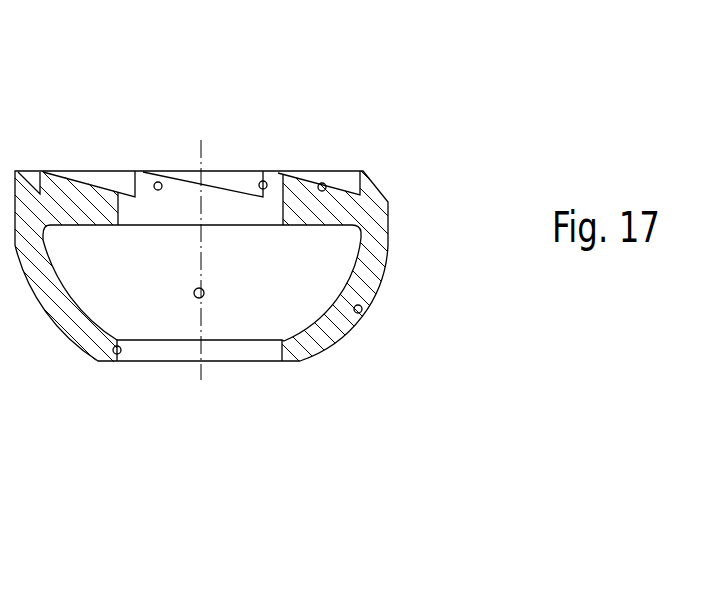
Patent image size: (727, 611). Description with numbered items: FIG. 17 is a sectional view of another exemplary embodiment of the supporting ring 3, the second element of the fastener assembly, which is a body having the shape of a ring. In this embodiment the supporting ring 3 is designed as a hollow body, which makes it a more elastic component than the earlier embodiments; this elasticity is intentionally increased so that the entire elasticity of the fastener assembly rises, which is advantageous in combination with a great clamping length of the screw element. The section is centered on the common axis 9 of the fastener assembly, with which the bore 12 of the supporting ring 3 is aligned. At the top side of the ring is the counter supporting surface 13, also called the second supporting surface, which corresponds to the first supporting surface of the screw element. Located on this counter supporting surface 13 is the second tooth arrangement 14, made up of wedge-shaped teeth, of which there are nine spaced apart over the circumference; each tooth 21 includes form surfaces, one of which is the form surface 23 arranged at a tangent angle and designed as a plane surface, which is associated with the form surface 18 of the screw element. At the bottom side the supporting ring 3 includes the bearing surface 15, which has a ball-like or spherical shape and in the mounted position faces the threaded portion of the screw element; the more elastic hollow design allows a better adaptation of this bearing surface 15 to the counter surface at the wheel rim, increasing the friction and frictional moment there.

The supporting ring 3 is at (350, 153).
The counter supporting surface 13 is at (88, 160).
The second tooth arrangement 14 is at (203, 184).
The tooth 21 is at (160, 182).
The form surface 18 is at (260, 181).
The form surface 23 is at (320, 183).
The axis 9 is at (203, 298).
The bore 12 is at (121, 354).
The bearing surface 15 is at (362, 312).